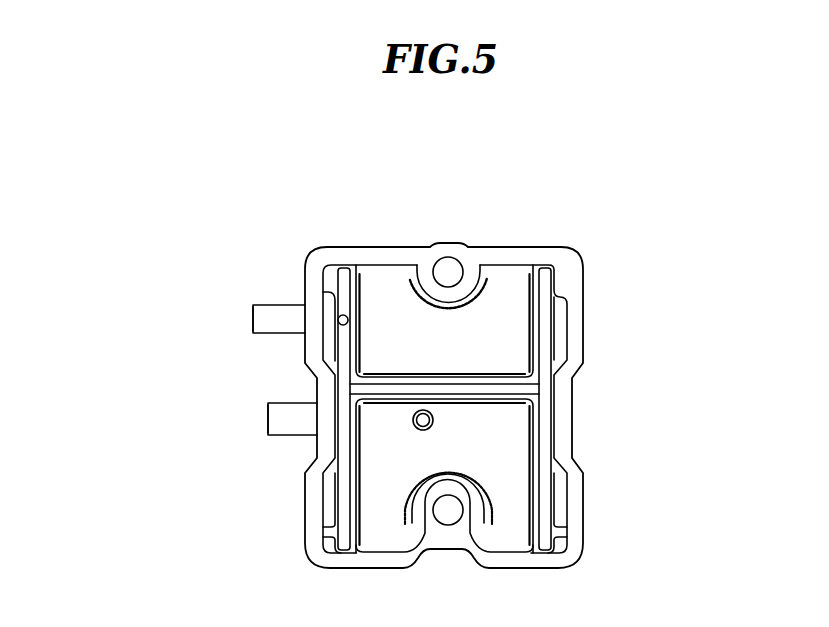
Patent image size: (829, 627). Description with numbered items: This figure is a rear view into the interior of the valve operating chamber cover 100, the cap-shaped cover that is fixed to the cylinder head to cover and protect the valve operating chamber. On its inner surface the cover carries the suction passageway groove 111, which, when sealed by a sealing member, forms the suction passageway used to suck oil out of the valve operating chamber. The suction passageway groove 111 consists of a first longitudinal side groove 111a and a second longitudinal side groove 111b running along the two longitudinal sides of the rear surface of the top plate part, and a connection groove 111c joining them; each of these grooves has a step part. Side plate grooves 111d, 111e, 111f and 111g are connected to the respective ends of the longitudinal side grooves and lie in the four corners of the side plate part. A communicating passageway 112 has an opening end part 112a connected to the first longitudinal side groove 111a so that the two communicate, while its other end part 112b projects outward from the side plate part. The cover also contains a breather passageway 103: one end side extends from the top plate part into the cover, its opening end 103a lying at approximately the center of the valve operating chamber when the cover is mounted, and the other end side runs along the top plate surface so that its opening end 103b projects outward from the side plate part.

The valve operating chamber cover 100 is at (513, 247).
The suction passageway groove 111 is at (540, 391).
The first longitudinal side groove 111a is at (345, 267).
The second longitudinal side groove 111b is at (550, 267).
The connection groove 111c is at (392, 386).
The side plate groove 111d is at (326, 263).
The side plate groove 111e is at (332, 545).
The side plate groove 111f is at (560, 546).
The side plate groove 111g is at (556, 267).
The communicating passageway 112 is at (268, 312).
The opening end part 112a is at (339, 324).
The other end part 112b is at (253, 320).
The breather passageway 103 is at (288, 425).
The opening end 103a is at (423, 428).
The opening end 103b is at (268, 422).